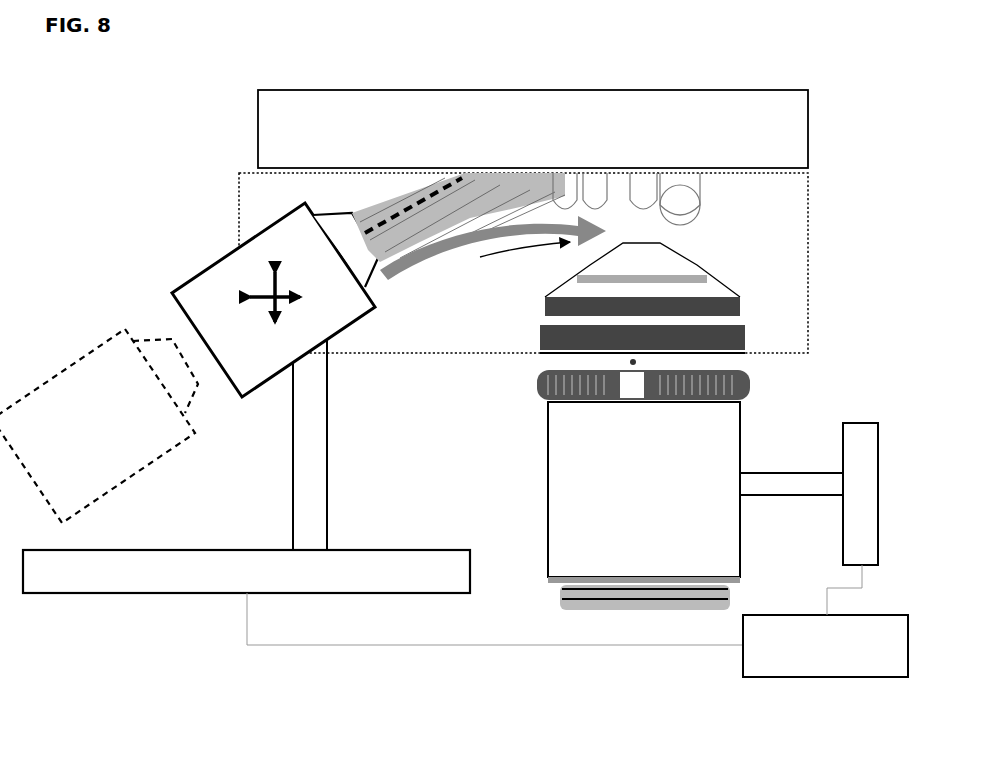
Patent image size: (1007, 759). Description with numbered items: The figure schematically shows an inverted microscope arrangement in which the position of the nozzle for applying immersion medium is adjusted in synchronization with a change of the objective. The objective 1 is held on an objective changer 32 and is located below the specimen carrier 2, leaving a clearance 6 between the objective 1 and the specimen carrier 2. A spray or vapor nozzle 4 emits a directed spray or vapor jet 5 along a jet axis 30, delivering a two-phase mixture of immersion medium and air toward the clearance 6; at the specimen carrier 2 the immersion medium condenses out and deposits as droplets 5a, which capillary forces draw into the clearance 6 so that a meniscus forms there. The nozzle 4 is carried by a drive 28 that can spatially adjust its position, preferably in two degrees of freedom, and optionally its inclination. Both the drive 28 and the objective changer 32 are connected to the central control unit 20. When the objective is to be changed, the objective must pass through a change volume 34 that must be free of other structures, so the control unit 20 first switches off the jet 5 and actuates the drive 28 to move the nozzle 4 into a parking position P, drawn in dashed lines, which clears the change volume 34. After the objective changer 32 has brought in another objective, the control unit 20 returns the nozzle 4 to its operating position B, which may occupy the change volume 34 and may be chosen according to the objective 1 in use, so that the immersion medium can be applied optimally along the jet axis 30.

The objective 1 is at (570, 458).
The specimen carrier 2 is at (258, 110).
The spray or vapor nozzle 4 is at (68, 370).
The spray or vapor jet 5 is at (383, 196).
The droplets 5a is at (637, 223).
The clearance 6 is at (506, 259).
The central control unit 20 is at (765, 627).
The drive 28 is at (307, 417).
The jet axis 30 is at (380, 232).
The objective changer 32 is at (850, 442).
The change volume 34 is at (808, 297).
The operating position B is at (204, 235).
The parking position P is at (49, 338).